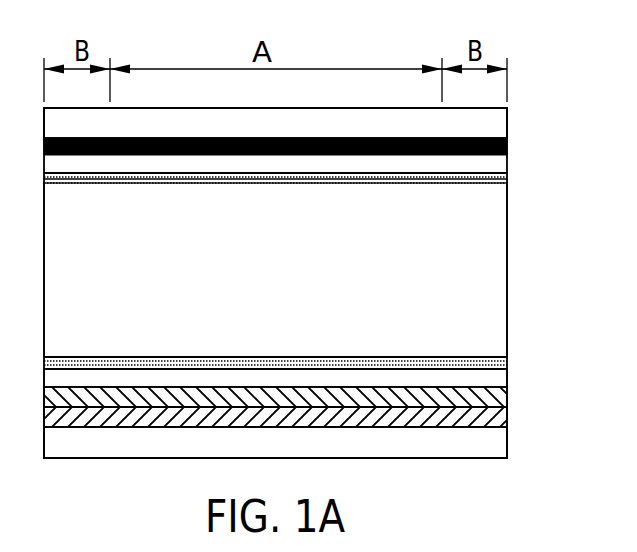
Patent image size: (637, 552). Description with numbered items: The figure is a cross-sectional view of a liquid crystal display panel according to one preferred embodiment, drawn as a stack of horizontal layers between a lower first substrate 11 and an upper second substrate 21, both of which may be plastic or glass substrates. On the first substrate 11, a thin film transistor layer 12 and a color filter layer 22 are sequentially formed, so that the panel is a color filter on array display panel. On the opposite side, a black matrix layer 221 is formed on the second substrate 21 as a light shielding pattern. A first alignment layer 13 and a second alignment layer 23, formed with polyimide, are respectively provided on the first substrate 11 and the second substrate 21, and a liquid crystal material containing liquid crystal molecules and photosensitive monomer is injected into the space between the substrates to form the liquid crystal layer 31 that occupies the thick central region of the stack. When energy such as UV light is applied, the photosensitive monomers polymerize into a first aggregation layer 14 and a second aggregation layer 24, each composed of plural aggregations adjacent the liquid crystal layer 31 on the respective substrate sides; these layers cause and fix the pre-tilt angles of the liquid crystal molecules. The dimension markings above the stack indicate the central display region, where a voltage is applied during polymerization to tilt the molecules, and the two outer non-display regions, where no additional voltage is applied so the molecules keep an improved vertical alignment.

The first substrate 11 is at (502, 443).
The thin film transistor layer 12 is at (500, 416).
The first alignment layer 13 is at (500, 375).
The first aggregation layer 14 is at (510, 362).
The second substrate 21 is at (490, 118).
The color filter layer 22 is at (507, 390).
The black matrix layer 221 is at (490, 143).
The second alignment layer 23 is at (505, 163).
The second aggregation layer 24 is at (503, 180).
The liquid crystal layer 31 is at (488, 260).